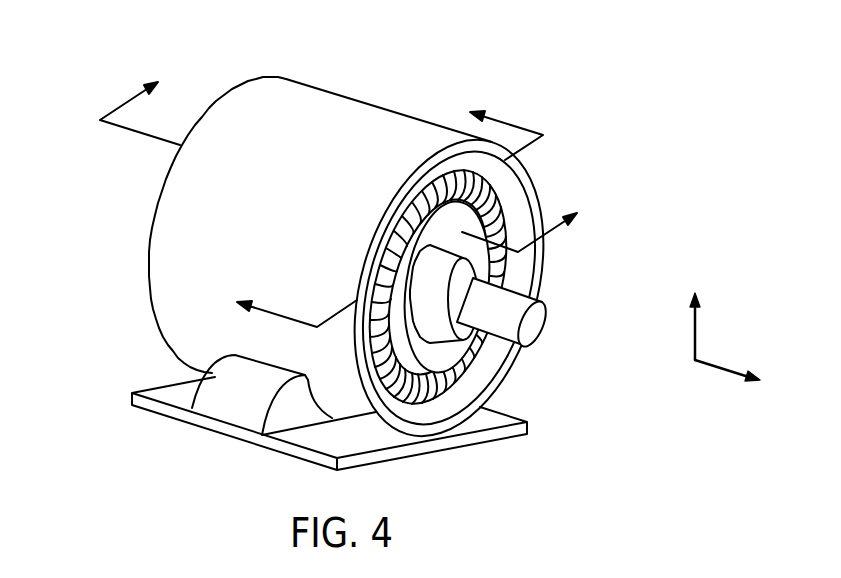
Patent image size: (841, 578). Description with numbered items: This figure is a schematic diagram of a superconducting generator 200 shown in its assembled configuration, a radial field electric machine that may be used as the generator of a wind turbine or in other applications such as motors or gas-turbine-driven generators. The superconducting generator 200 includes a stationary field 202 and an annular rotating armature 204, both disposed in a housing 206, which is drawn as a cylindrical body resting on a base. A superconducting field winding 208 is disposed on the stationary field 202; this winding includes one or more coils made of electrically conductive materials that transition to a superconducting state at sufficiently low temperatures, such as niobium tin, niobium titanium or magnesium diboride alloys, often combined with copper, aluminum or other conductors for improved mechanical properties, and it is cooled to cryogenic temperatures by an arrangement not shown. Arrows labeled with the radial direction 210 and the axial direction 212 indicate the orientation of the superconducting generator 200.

The superconducting generator 200 is at (358, 258).
The stationary field 202 is at (520, 267).
The annular rotating armature 204 is at (440, 350).
The housing 206 is at (348, 100).
The superconducting field winding 208 is at (432, 390).
The radial direction 210 is at (693, 327).
The axial direction 212 is at (713, 370).